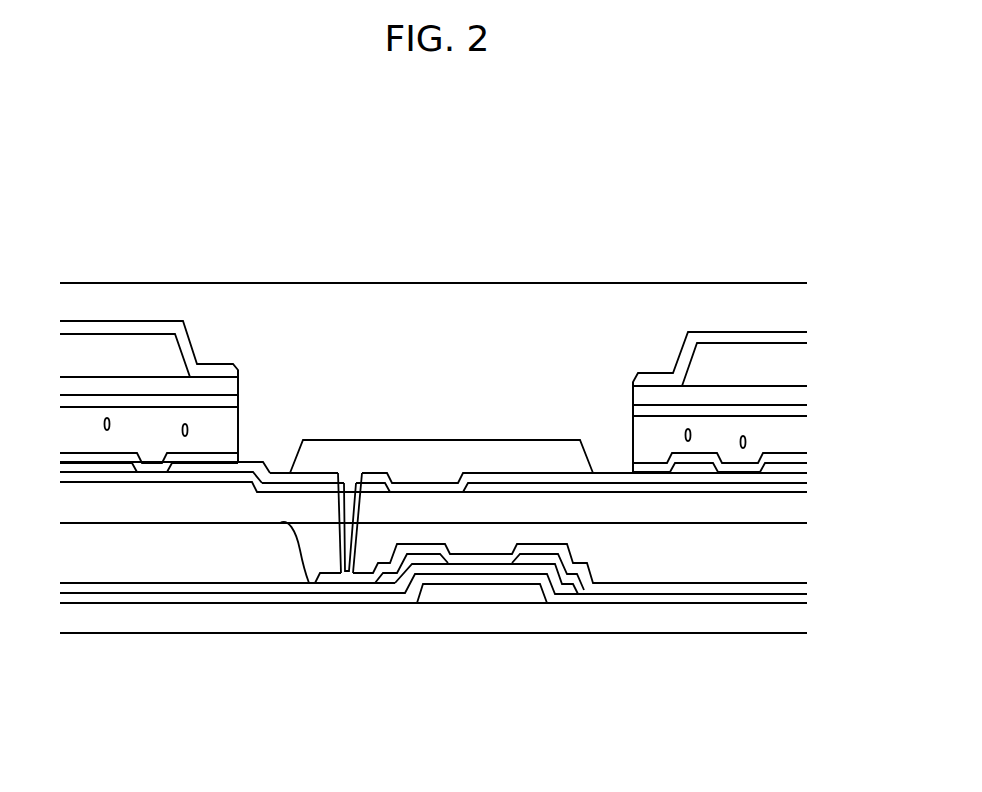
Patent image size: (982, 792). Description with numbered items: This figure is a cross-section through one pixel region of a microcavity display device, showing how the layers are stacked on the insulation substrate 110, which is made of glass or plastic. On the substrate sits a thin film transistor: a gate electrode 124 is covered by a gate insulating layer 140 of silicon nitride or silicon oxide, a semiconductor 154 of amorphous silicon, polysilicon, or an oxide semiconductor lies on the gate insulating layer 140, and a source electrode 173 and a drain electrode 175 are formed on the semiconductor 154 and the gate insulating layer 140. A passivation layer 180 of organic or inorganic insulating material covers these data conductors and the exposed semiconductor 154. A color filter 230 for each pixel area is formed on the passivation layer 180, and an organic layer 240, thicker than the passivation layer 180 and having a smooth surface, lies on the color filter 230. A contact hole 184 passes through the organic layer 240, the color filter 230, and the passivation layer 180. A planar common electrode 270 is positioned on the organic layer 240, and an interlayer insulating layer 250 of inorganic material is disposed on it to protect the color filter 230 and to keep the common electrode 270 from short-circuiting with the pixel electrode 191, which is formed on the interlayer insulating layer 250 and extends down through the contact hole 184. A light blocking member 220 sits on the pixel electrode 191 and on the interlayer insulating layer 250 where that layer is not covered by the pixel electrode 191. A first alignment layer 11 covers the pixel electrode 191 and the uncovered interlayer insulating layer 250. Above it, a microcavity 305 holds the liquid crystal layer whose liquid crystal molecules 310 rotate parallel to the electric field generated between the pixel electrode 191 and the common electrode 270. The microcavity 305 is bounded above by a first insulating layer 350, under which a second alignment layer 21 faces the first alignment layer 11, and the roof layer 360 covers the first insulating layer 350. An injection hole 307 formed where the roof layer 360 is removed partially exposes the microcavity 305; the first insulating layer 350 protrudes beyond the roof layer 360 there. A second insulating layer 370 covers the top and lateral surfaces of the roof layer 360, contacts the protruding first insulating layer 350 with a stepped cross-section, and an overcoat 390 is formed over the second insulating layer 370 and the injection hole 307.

The first alignment layer 11 is at (77, 457).
The second alignment layer 21 is at (88, 398).
The insulation substrate 110 is at (647, 628).
The gate electrode 124 is at (507, 595).
The gate insulating layer 140 is at (672, 600).
The semiconductor 154 is at (562, 585).
The source electrode 173 is at (580, 587).
The drain electrode 175 is at (375, 588).
The passivation layer 180 is at (715, 590).
The contact hole 184 is at (338, 574).
The pixel electrode 191 is at (119, 470).
The light blocking member 220 is at (468, 455).
The color filter 230 is at (237, 566).
The organic layer 240 is at (170, 515).
The interlayer insulating layer 250 is at (408, 487).
The common electrode 270 is at (780, 487).
The microcavity 305 is at (213, 427).
The injection hole 307 is at (252, 413).
The liquid crystal molecules 310 is at (743, 436).
The first insulating layer 350 is at (145, 327).
The roof layer 360 is at (163, 358).
The second insulating layer 370 is at (115, 388).
The overcoat 390 is at (622, 297).